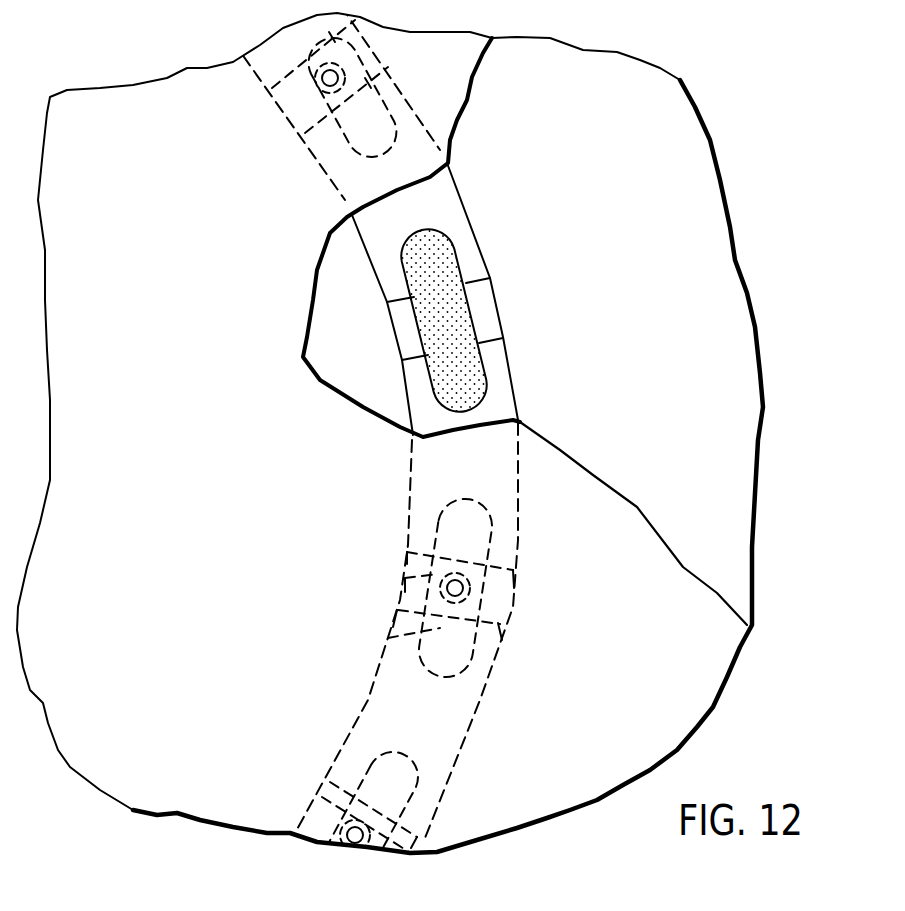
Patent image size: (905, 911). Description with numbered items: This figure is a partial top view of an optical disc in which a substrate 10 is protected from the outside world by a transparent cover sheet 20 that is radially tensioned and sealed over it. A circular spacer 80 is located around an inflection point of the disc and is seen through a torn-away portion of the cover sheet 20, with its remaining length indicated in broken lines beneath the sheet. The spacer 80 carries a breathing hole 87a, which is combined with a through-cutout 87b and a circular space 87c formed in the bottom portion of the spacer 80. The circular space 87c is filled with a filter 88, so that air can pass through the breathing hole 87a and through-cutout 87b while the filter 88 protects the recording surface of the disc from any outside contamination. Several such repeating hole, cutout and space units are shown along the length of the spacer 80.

The substrate 10 is at (713, 270).
The transparent cover sheet 20 is at (240, 487).
The circular spacer 80 is at (462, 200).
The filter 88 is at (447, 270).
The breathing hole 87a is at (458, 456).
The through-cutout 87b is at (405, 322).
The circular space 87c is at (388, 638).